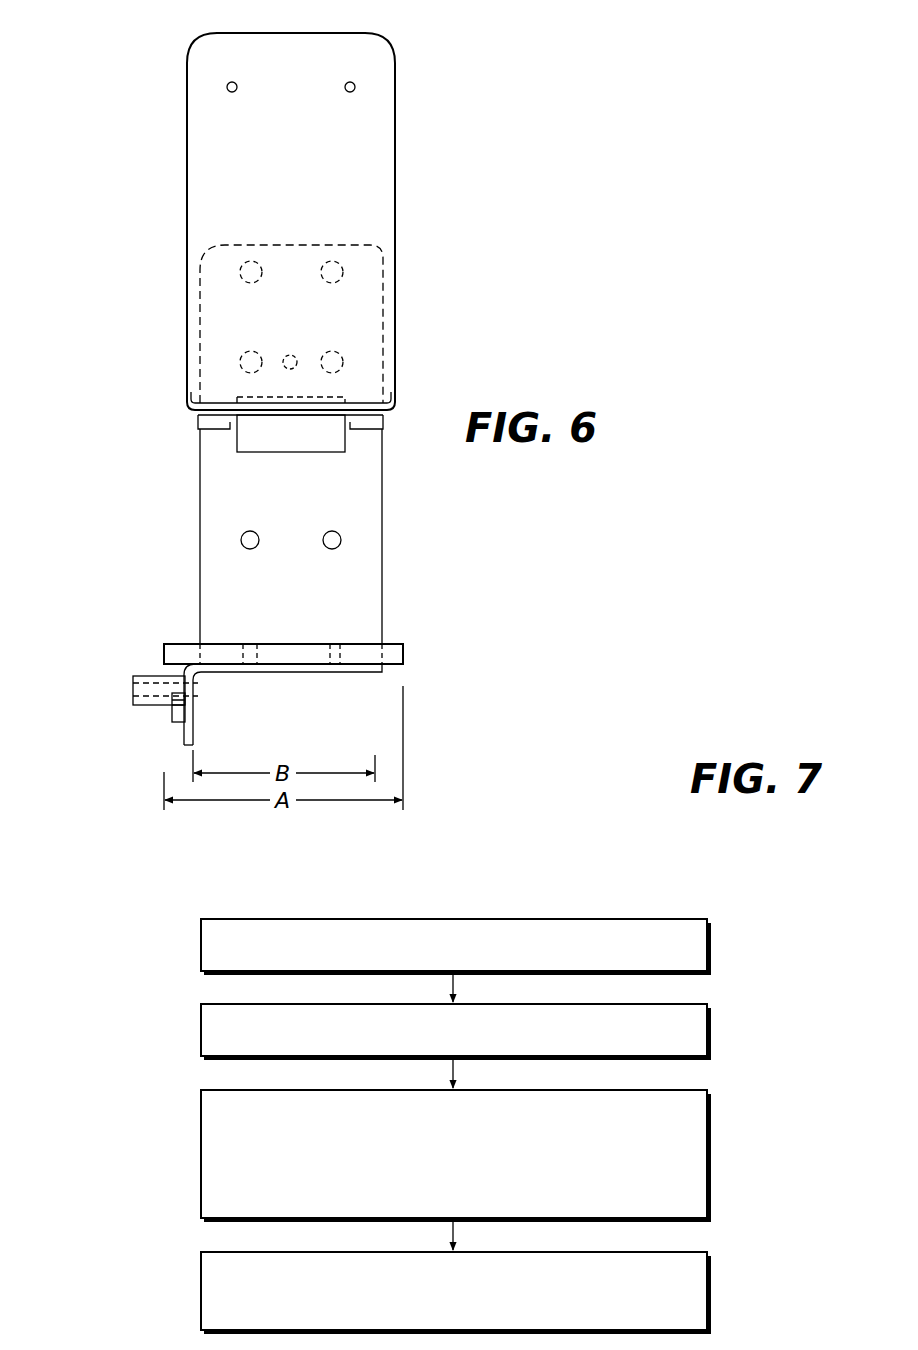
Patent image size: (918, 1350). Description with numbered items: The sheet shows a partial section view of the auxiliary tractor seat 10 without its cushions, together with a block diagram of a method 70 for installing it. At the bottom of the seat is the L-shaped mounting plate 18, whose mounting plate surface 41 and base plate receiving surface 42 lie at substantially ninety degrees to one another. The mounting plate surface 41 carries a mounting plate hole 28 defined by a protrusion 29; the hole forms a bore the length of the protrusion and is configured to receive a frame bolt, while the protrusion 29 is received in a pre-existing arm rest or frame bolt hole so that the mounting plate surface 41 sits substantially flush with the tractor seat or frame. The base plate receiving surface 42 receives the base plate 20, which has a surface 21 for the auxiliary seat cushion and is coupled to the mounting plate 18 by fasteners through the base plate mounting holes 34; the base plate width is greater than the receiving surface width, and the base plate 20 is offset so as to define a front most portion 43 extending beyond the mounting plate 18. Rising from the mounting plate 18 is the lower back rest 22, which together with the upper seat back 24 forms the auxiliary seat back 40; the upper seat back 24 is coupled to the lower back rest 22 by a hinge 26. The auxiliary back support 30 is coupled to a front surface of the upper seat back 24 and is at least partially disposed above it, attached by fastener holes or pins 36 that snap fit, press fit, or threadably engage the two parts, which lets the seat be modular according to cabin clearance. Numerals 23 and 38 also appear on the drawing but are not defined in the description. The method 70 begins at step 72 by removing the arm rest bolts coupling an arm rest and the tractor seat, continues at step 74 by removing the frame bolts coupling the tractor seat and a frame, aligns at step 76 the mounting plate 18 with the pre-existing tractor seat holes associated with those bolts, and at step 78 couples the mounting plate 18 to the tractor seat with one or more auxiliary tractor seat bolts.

In FIG. 6, the auxiliary tractor seat 10 is at (146, 69).
In FIG. 6, the mounting plate 18 is at (193, 737).
In FIG. 6, the base plate 20 is at (405, 656).
In FIG. 6, the surface 21 is at (180, 637).
In FIG. 6, the lower back rest 22 is at (378, 506).
In FIG. 6, the seat plate 23 is at (184, 152).
In FIG. 6, the upper seat back 24 is at (199, 318).
In FIG. 6, the hinge 26 is at (262, 418).
In FIG. 6, the mounting plate hole 28 is at (140, 691).
In FIG. 6, the protrusion 29 is at (147, 675).
In FIG. 6, the auxiliary back support 30 is at (381, 140).
In FIG. 6, the base plate mounting holes 34 is at (333, 643).
In FIG. 6, the fastener holes or pins 36 is at (240, 362).
In FIG. 6, the holes 38 is at (356, 85).
In FIG. 6, the auxiliary seat back 40 is at (97, 521).
In FIG. 6, the mounting plate surface 41 is at (182, 738).
In FIG. 6, the base plate receiving surface 42 is at (393, 666).
In FIG. 6, the front most portion 43 is at (317, 697).
In FIG. 7, the method 70 is at (686, 872).
In FIG. 7, the removing arm rest bolts step 72 is at (710, 945).
In FIG. 7, the removing frame bolts step 74 is at (710, 1030).
In FIG. 7, the aligning mounting plate step 76 is at (710, 1150).
In FIG. 7, the coupling mounting plate step 78 is at (710, 1290).